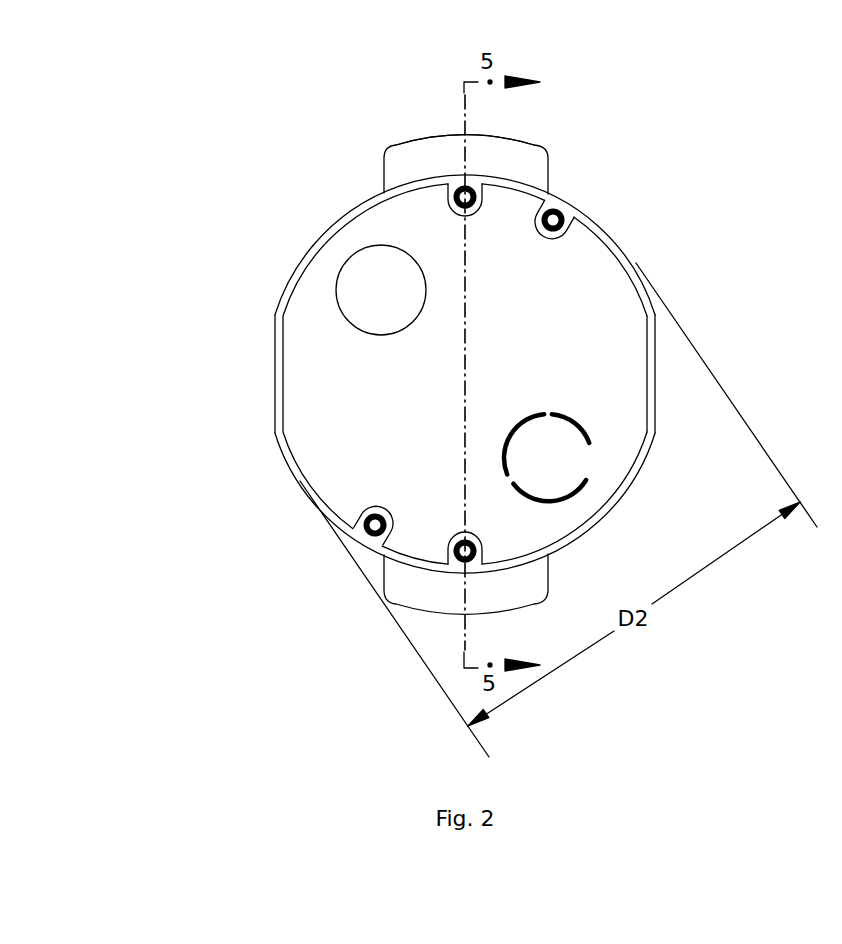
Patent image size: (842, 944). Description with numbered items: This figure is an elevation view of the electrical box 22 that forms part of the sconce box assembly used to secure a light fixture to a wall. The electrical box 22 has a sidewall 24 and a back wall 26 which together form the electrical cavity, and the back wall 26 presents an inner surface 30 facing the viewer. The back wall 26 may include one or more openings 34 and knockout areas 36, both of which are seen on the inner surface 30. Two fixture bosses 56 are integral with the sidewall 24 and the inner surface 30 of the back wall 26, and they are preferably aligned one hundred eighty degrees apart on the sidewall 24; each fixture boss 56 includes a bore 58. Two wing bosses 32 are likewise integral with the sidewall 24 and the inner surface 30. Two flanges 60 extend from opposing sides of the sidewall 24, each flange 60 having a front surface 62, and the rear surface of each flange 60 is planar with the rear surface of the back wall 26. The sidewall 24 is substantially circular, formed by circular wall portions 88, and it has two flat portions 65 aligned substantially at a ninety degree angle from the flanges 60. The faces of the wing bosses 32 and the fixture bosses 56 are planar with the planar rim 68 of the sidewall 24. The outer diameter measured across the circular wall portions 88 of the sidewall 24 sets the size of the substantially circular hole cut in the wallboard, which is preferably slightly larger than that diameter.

The electrical box 22 is at (232, 136).
The sidewall 24 is at (350, 213).
The back wall 26 is at (600, 271).
The inner surface 30 is at (388, 413).
The wing boss 32 is at (457, 540).
The opening 34 is at (369, 303).
The knockout area 36 is at (536, 471).
The fixture boss 56 is at (543, 234).
The bore 58 is at (558, 214).
The flange 60 is at (410, 136).
The front surface 62 is at (490, 170).
The flat portion 65 is at (276, 399).
The planar rim 68 is at (303, 488).
The circular wall portion 88 is at (290, 278).